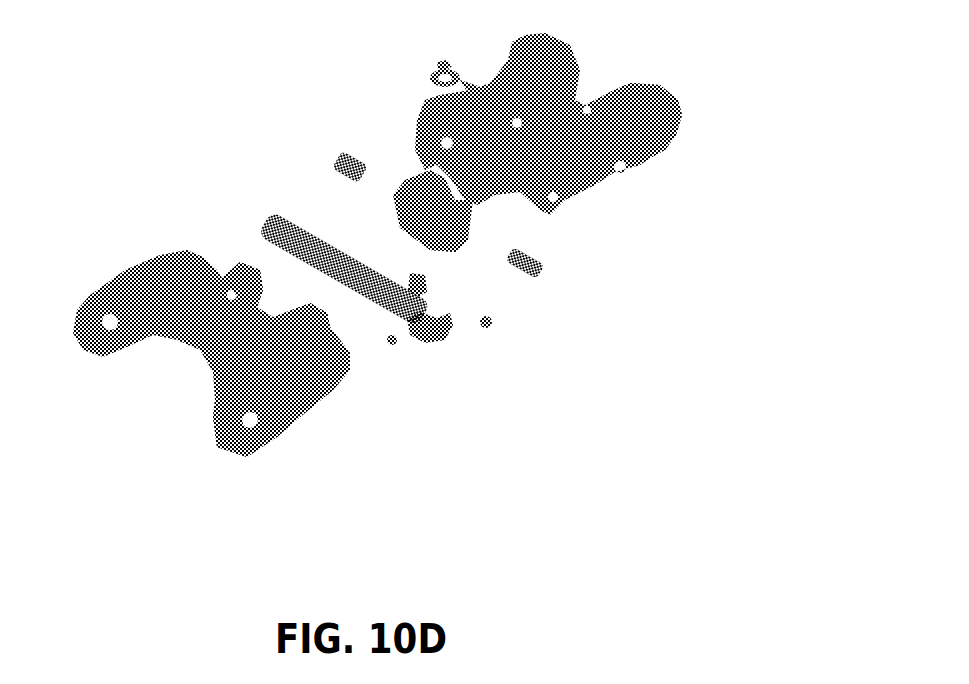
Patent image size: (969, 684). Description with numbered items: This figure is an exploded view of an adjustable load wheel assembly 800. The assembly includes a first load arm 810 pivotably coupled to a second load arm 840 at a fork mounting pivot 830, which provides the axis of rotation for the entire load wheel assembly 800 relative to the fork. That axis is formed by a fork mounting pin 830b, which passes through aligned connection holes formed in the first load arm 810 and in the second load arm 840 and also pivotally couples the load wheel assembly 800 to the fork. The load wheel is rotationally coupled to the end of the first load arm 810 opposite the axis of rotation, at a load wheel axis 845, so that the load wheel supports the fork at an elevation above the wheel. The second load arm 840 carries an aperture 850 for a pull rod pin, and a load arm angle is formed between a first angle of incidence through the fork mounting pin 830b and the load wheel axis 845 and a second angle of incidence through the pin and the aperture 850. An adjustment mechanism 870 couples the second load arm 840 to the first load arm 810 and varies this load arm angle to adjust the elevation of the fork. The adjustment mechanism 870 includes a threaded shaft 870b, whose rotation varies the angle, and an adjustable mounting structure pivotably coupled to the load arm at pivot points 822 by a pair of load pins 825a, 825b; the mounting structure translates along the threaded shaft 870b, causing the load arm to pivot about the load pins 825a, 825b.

The load wheel assembly 800 is at (768, 57).
The first load arm 810 is at (238, 452).
The pivot points 822 is at (240, 267).
The load pin 825a is at (333, 158).
The load pin 825b is at (532, 273).
The fork mounting pivot 830 is at (343, 370).
The fork mounting pin 830b is at (263, 217).
The second load arm 840 is at (655, 168).
The load wheel axis 845 is at (268, 430).
The aperture 850 is at (672, 125).
The adjustment mechanism 870 is at (423, 172).
The threaded shaft 870b is at (437, 197).